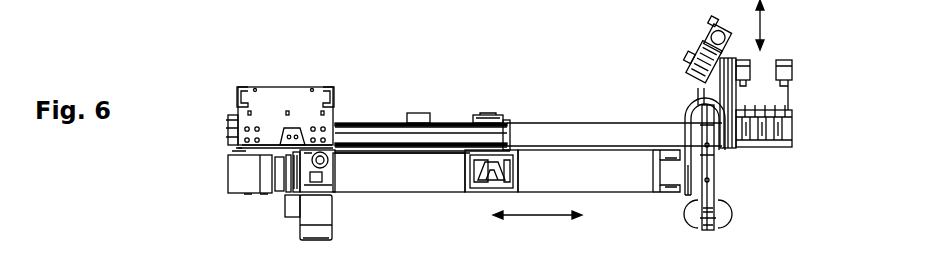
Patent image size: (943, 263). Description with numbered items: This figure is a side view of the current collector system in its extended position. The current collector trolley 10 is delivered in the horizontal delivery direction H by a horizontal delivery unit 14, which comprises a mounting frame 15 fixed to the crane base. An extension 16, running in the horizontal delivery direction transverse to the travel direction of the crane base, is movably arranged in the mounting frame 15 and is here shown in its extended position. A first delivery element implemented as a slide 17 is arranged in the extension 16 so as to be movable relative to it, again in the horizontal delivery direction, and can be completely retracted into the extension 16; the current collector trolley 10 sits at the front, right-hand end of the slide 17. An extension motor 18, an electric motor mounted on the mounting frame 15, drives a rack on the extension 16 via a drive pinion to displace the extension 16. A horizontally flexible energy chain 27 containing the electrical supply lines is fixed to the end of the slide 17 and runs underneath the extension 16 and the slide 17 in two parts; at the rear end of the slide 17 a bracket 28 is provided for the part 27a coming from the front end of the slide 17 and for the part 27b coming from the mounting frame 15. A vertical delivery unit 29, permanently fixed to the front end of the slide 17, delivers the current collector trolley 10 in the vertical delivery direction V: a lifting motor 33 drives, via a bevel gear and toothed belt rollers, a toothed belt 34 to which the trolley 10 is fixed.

The current collector trolley 10 is at (790, 101).
The horizontal delivery unit 14 is at (505, 58).
The mounting frame 15 is at (255, 86).
The extension 16 is at (393, 122).
The slide 17 is at (582, 122).
The extension motor 18 is at (300, 233).
The energy chain 27 is at (424, 170).
The part of the energy chain 27a is at (622, 170).
The part of the energy chain 27b is at (363, 170).
The bracket 28 is at (478, 192).
The vertical delivery unit 29 is at (768, 172).
The lifting motor 33 is at (693, 62).
The belt 34 is at (727, 190).